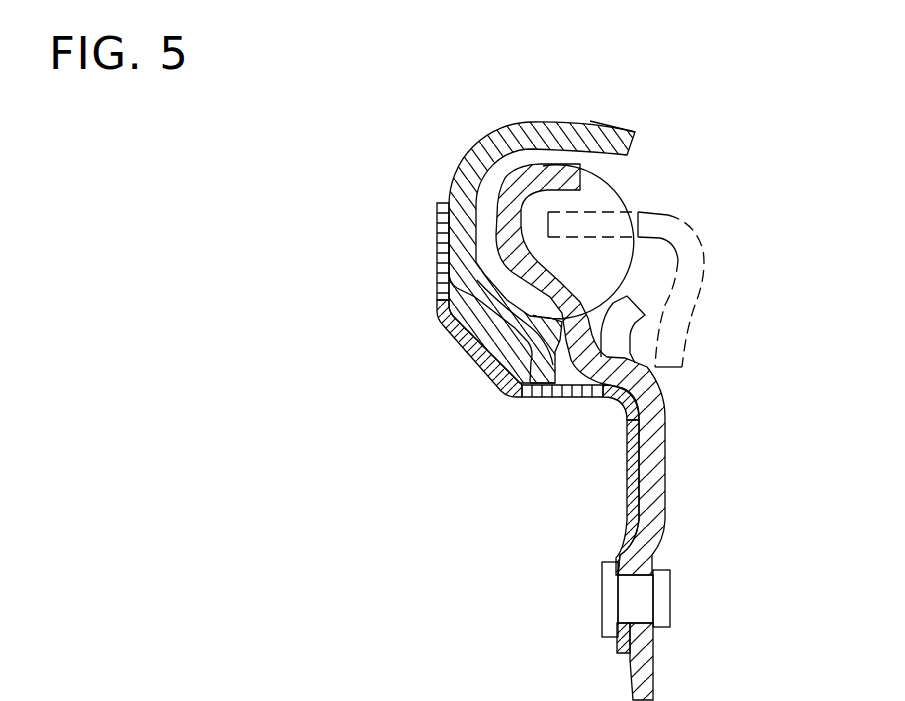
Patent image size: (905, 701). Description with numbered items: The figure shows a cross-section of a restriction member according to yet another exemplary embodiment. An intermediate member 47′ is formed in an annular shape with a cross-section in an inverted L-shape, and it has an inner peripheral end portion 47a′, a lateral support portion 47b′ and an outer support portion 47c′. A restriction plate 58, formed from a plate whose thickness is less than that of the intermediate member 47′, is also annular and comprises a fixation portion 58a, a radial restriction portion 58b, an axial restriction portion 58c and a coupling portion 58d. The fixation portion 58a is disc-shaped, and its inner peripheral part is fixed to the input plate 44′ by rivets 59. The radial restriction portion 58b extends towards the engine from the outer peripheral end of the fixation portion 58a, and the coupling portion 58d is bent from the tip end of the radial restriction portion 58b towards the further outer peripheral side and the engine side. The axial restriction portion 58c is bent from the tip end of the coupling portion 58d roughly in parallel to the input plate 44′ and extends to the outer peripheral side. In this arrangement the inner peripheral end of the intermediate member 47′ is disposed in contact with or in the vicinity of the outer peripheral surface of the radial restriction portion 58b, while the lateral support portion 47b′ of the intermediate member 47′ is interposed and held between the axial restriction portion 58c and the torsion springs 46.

The input plate 44′ is at (667, 460).
The torsion springs 46 is at (610, 260).
The intermediate member 47′ is at (522, 110).
The inner peripheral end portion 47a′ is at (513, 392).
The lateral support portion 47b′ is at (464, 177).
The outer support portion 47c′ is at (592, 130).
The restriction plate 58 is at (482, 428).
The fixation portion 58a is at (623, 543).
The radial restriction portion 58b is at (558, 398).
The axial restriction portion 58c is at (444, 268).
The coupling portion 58d is at (487, 360).
The rivets 59 is at (672, 598).